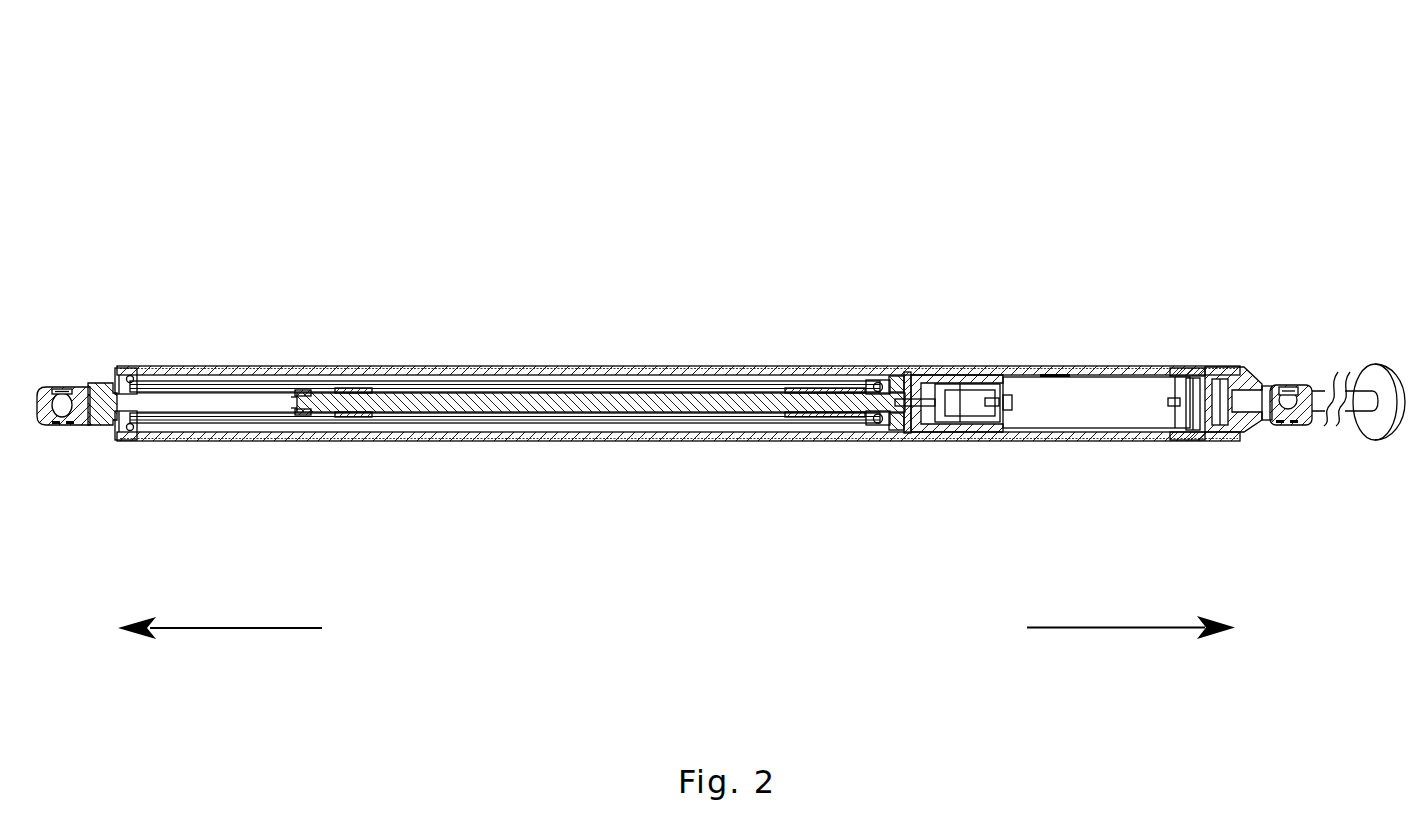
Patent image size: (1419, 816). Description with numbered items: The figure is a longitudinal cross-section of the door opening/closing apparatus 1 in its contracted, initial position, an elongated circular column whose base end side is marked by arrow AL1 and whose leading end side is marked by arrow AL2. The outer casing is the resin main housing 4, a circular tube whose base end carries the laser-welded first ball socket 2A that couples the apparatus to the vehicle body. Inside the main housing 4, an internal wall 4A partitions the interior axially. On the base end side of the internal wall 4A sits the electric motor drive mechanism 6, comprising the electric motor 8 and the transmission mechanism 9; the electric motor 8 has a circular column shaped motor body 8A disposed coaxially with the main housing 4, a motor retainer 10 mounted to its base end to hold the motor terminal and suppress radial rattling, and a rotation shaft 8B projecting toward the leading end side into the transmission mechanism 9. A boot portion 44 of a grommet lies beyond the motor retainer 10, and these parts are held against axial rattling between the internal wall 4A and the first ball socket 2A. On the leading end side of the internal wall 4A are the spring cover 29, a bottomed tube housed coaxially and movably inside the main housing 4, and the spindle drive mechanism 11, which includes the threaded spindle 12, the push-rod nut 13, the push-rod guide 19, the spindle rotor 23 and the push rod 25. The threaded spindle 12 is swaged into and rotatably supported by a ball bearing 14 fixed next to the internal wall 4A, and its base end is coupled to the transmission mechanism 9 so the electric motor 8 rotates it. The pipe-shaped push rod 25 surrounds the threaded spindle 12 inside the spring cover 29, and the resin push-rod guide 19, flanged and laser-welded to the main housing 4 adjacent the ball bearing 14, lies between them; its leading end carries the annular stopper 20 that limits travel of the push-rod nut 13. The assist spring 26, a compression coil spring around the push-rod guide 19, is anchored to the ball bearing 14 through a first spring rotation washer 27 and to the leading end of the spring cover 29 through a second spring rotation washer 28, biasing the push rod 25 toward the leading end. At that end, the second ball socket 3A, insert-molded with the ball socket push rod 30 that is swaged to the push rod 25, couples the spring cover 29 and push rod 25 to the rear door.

The door opening/closing apparatus 1 is at (640, 163).
The first ball socket 2A is at (1251, 383).
The second ball socket 3A is at (100, 383).
The main housing 4 is at (1126, 441).
The internal wall 4A is at (902, 373).
The electric motor drive mechanism 6 is at (983, 227).
The electric motor 8 is at (1112, 258).
The motor body 8A is at (1142, 390).
The rotation shaft 8B is at (1000, 383).
The transmission mechanism 9 is at (968, 390).
The motor retainer 10 is at (1193, 370).
The spindle drive mechanism 11 is at (677, 232).
The threaded spindle 12 is at (689, 400).
The push-rod nut 13 is at (794, 383).
The ball bearing 14 is at (878, 374).
The push-rod guide 19 is at (646, 382).
The stopper 20 is at (368, 386).
The spindle rotor 23 is at (302, 390).
The push rod 25 is at (250, 386).
The assist spring 26 is at (474, 382).
The first spring rotation washer 27 is at (866, 374).
The second spring rotation washer 28 is at (125, 376).
The spring cover 29 is at (497, 433).
The ball socket push rod 30 is at (103, 406).
The boot portion 44 is at (1243, 433).
The arrow AL1 is at (1135, 628).
The arrow AL2 is at (248, 628).